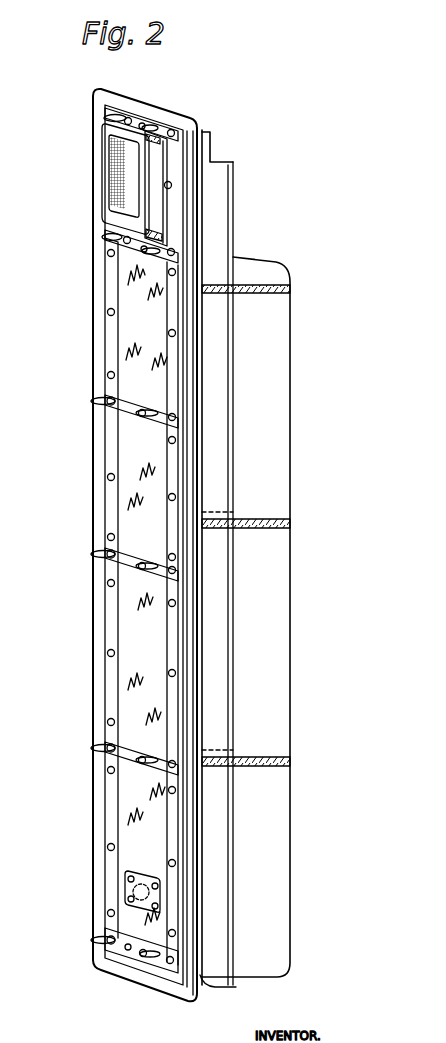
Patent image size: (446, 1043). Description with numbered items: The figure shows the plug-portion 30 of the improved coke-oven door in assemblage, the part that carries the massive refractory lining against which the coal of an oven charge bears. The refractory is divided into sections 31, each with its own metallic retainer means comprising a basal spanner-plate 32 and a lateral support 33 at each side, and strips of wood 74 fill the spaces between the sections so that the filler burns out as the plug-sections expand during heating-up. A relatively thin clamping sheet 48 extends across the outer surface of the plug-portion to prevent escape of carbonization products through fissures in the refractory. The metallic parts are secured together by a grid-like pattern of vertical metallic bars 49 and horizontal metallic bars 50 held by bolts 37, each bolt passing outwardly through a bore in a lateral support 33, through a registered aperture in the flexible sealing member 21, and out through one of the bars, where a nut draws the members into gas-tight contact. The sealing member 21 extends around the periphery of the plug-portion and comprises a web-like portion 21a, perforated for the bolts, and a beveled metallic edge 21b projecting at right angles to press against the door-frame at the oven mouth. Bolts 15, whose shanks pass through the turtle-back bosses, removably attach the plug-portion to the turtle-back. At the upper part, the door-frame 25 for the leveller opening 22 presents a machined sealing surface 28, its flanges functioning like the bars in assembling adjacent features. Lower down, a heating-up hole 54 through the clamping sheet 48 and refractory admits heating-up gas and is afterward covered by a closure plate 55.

The bolts 15 is at (100, 396).
The flexible sealing member 21 is at (143, 110).
The web-like portion 21a is at (190, 1002).
The beveled metallic edge 21b is at (223, 988).
The opening 22 is at (126, 183).
The door-frame 25 is at (157, 155).
The machined sealing surface 28 is at (104, 200).
The plug-portion 30 is at (84, 511).
The sections 31 is at (282, 365).
The basal spanner-plate 32 is at (250, 515).
The lateral support 33 is at (222, 447).
The bolts 37 is at (173, 328).
The clamping sheet 48 is at (153, 345).
The vertical metallic bars 49 is at (114, 337).
The horizontal metallic bars 50 is at (138, 404).
The heating-up hole 54 is at (130, 888).
The closure plate 55 is at (125, 897).
The strips of wood 74 is at (291, 289).